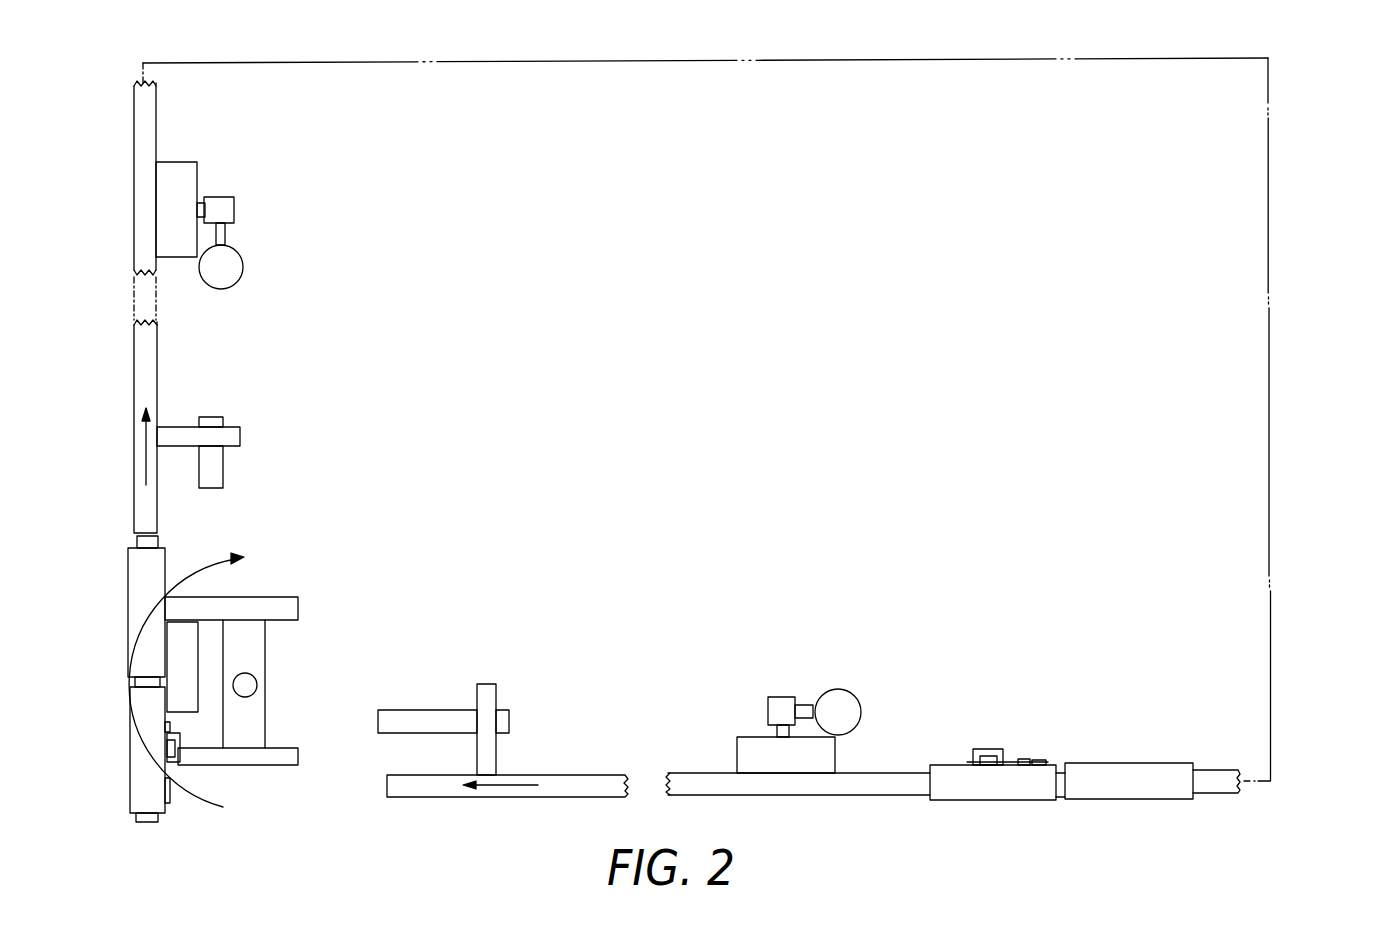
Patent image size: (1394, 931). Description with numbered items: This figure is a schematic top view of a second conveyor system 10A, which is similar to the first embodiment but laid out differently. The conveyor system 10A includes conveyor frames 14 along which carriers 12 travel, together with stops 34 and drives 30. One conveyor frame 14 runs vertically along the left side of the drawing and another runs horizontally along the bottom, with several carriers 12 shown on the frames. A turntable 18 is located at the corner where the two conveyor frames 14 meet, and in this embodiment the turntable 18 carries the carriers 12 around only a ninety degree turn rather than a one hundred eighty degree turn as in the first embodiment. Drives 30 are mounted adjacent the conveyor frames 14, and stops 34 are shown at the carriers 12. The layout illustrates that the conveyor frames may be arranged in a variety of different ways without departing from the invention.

The conveyor system 10A is at (1295, 88).
The carrier 12 is at (128, 590).
The conveyor frame 14 is at (158, 373).
The turntable 18 is at (257, 770).
The drive 30 is at (255, 229).
The stop 34 is at (183, 738).